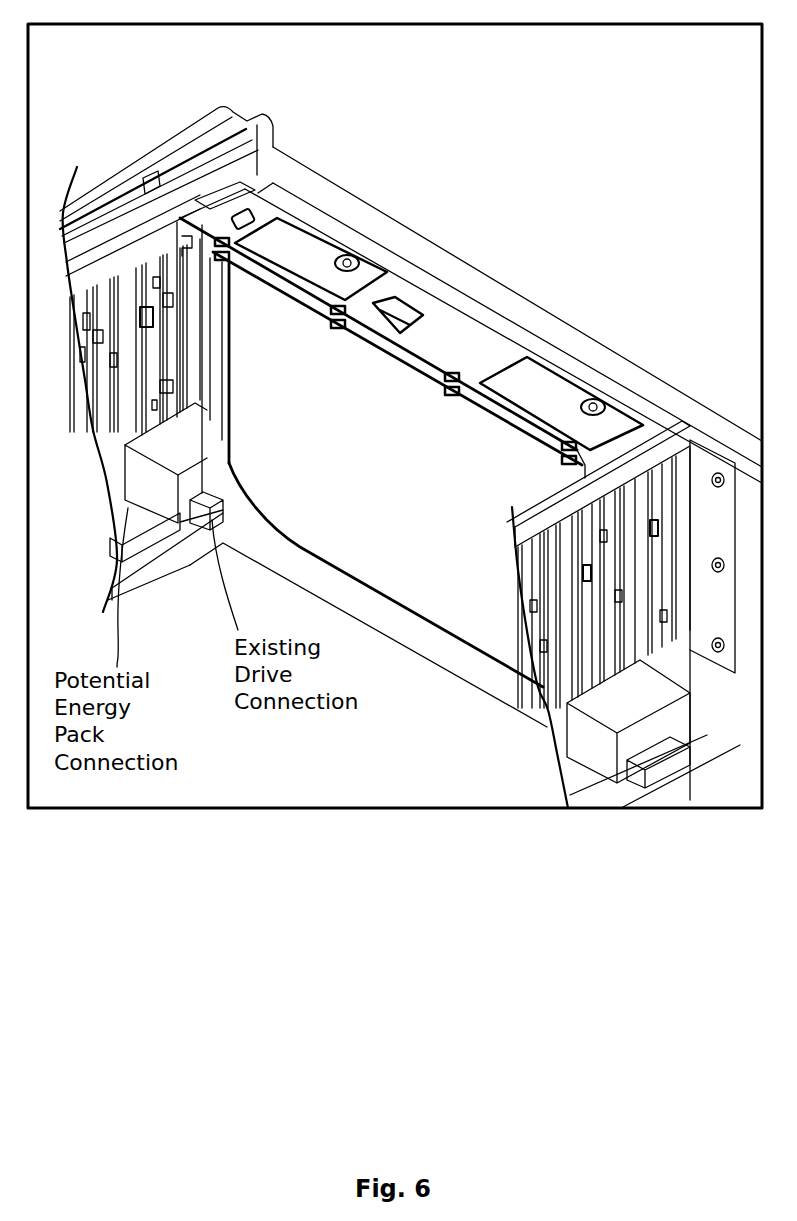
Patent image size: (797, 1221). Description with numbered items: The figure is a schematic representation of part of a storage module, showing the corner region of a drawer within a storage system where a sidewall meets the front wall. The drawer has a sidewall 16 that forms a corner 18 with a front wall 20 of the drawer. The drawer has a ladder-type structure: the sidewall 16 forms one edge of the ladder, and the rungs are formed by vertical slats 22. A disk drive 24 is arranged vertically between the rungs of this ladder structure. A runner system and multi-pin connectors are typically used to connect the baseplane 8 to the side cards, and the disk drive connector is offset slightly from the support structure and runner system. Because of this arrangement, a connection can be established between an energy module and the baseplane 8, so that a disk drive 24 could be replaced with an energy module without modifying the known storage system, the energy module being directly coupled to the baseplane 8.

The baseplane 8 is at (188, 580).
The sidewall 16 is at (348, 215).
The corner 18 is at (243, 98).
The front wall 20 is at (148, 207).
The vertical slats 22 is at (642, 447).
The disk drive 24 is at (357, 453).